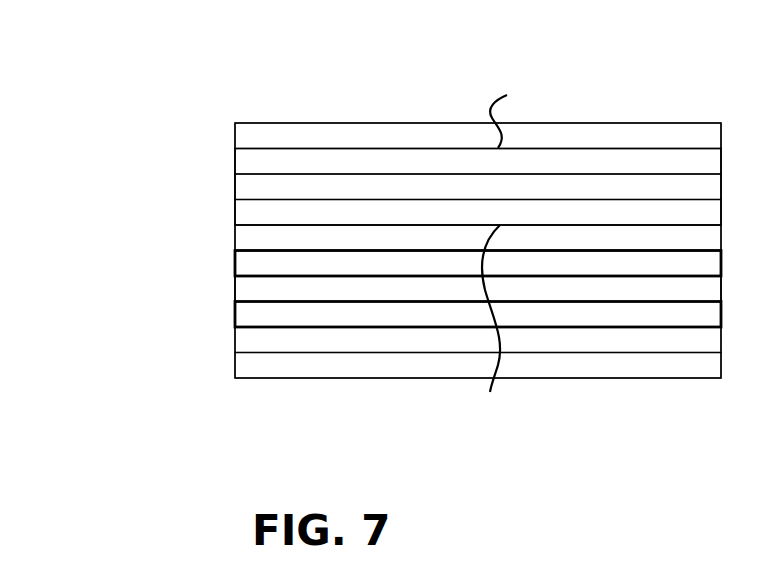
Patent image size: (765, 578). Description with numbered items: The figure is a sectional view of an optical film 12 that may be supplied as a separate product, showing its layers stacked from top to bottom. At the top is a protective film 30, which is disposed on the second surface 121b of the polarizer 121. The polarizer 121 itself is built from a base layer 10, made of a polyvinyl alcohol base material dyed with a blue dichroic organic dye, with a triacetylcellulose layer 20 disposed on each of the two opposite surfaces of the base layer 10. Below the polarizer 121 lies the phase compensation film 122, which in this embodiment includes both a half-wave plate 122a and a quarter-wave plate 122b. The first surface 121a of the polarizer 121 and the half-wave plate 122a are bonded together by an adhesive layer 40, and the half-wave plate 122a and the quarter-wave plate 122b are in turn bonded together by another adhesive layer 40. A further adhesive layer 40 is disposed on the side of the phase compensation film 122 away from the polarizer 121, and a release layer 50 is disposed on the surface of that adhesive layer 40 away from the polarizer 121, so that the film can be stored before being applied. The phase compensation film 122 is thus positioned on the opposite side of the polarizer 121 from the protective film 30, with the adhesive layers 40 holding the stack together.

The optical film 12 is at (107, 72).
The protective film 30 is at (262, 124).
The triacetylcellulose layer 20 is at (262, 152).
The base layer 10 is at (262, 184).
The polarizer 121 is at (147, 143).
The adhesive layer 40 is at (262, 242).
The phase compensation film 122 is at (112, 263).
The λ/2 plate 122a is at (262, 266).
The λ/4 plate 122b is at (262, 319).
The release layer 50 is at (262, 375).
The first surface of the polarizer 121a is at (480, 324).
The second surface of the polarizer 121b is at (506, 105).